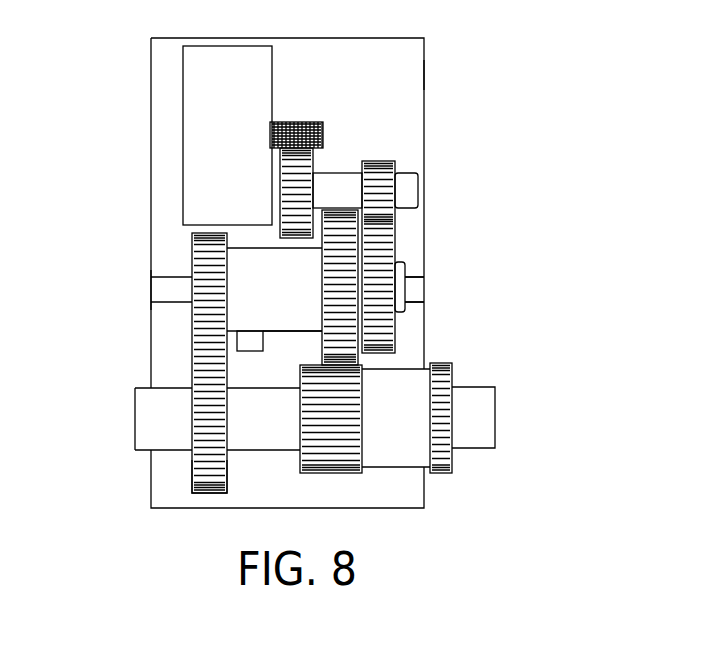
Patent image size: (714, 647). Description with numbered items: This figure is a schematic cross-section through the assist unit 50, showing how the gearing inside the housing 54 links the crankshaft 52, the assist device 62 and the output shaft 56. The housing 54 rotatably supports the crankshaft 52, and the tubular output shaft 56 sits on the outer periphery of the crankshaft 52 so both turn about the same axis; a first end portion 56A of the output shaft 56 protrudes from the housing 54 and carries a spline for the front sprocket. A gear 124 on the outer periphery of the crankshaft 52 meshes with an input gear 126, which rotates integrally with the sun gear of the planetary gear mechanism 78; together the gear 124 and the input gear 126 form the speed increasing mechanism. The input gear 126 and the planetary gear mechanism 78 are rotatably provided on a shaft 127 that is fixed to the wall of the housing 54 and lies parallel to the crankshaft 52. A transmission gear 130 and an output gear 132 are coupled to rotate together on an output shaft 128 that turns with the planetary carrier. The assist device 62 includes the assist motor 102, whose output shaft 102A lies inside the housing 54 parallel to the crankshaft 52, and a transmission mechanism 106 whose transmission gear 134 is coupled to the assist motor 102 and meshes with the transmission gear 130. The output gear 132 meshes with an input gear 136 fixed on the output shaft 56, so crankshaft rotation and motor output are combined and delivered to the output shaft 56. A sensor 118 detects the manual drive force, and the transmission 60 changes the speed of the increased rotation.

The assist unit 50 is at (470, 30).
The housing 54 is at (424, 72).
The assist device 62 is at (335, 85).
The assist motor 102 is at (183, 75).
The output shaft 102A is at (293, 120).
The transmission mechanism 106 is at (427, 190).
The transmission gear 134 is at (382, 161).
The output gear 132 is at (322, 298).
The output shaft 128 is at (405, 262).
The transmission gear 130 is at (397, 322).
The input gear 126 is at (192, 250).
The shaft 127 is at (151, 293).
The transmission 60 is at (113, 298).
The sensor 118 is at (250, 351).
The planetary gear mechanism 78 is at (278, 333).
The crankshaft 52 is at (135, 418).
The gear 124 is at (192, 470).
The input gear 136 is at (330, 475).
The first end portion 56A is at (447, 365).
The output shaft 56 is at (398, 475).